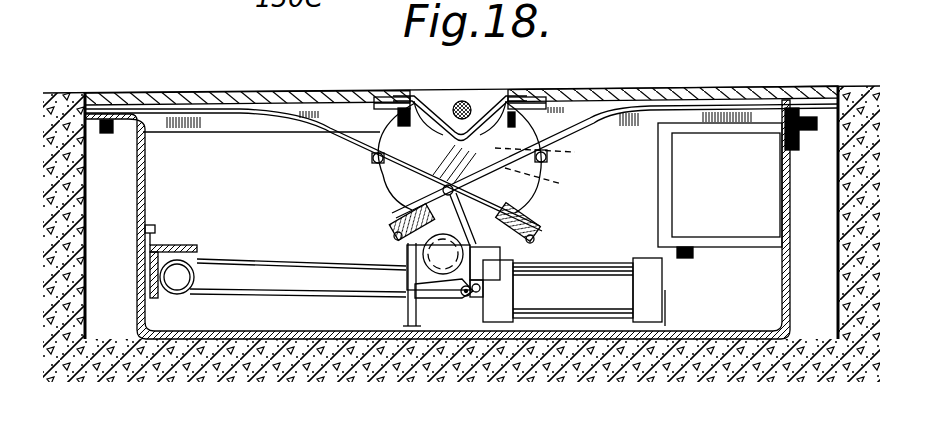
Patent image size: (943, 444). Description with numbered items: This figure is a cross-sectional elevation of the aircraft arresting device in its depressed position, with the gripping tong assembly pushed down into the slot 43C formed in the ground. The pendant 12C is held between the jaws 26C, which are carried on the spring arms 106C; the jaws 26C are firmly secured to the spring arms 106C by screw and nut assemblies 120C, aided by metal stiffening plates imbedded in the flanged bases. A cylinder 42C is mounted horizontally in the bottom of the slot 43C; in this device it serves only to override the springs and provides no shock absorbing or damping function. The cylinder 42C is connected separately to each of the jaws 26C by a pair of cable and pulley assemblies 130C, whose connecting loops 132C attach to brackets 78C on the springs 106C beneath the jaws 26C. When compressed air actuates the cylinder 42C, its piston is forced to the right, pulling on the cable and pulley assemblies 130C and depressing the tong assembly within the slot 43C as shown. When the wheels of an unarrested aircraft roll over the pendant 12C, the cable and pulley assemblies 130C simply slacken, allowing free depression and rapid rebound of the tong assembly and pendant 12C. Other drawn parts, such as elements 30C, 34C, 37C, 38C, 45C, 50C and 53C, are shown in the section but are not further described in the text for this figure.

The pendant 12C is at (462, 101).
The jaws 26C is at (413, 100).
The bracket 30C is at (378, 95).
The channel 34C is at (482, 100).
The pit liner 37C is at (368, 142).
The guide 38C is at (378, 171).
The cylinder 42C is at (517, 241).
The slot 43C is at (837, 265).
The bracket 45C is at (798, 117).
The slab 50C is at (866, 98).
The support 53C is at (416, 316).
The brackets 78C is at (420, 187).
The spring arms 106C is at (283, 110).
The screw and nut assemblies 120C is at (410, 241).
The cable and pulley assemblies 130C is at (272, 297).
The connecting loops 132C is at (398, 210).